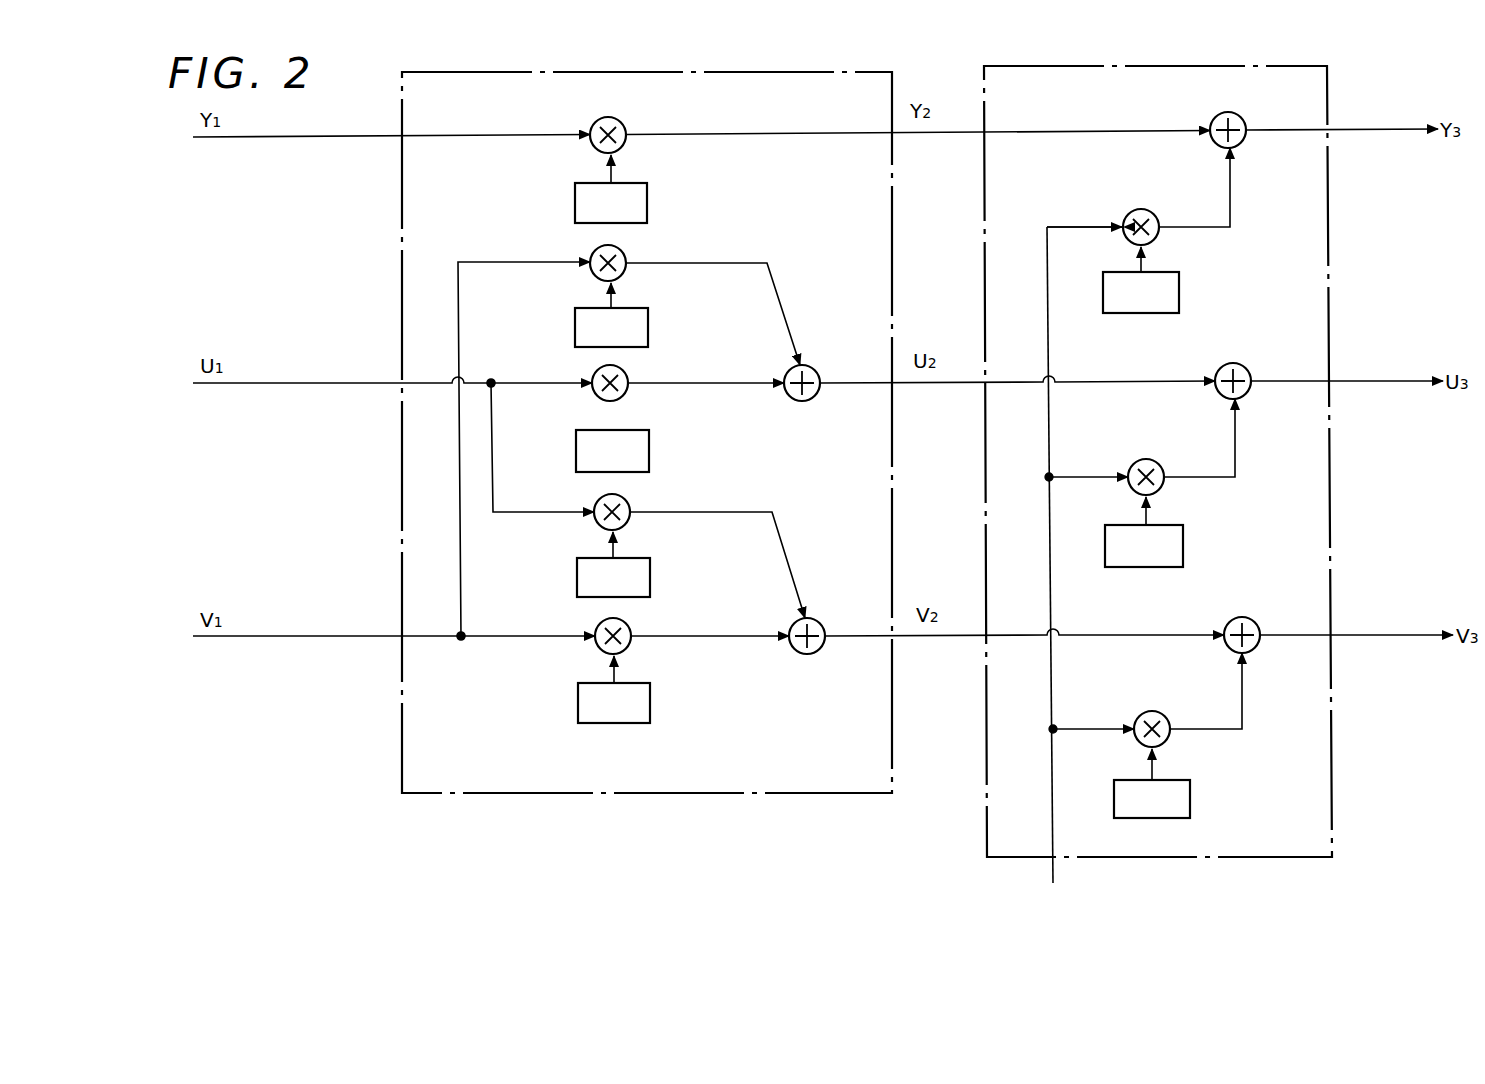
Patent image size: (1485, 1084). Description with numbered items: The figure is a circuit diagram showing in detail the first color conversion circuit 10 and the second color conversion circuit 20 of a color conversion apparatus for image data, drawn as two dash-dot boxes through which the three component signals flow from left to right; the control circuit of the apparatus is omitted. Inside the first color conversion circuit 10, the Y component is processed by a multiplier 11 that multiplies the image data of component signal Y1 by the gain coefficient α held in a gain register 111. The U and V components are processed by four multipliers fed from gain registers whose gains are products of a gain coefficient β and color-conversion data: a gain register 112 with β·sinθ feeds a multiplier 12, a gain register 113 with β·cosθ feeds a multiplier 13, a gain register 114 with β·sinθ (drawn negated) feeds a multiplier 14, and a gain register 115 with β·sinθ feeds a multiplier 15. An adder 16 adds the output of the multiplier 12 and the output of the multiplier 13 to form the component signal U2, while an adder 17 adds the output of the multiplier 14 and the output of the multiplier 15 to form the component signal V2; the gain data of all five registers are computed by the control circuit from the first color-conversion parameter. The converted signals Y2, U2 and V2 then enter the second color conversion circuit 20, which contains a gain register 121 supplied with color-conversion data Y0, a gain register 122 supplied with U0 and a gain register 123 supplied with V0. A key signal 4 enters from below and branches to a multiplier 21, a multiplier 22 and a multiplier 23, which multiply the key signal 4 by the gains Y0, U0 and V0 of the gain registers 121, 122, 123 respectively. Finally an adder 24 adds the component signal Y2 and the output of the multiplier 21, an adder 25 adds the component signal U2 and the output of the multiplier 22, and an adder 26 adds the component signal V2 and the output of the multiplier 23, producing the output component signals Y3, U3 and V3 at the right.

The key signal 4 is at (1053, 879).
The first color conversion circuit 10 is at (647, 432).
The multiplier 11 is at (620, 122).
The multiplier 12 is at (625, 254).
The multiplier 13 is at (627, 376).
The multiplier 14 is at (630, 505).
The multiplier 15 is at (630, 645).
The adder 16 is at (802, 364).
The adder 17 is at (808, 617).
The second color conversion circuit 20 is at (1158, 461).
The multiplier 21 is at (1128, 213).
The multiplier 22 is at (1132, 463).
The multiplier 23 is at (1138, 716).
The adder 24 is at (1214, 118).
The adder 25 is at (1219, 370).
The adder 26 is at (1227, 625).
The gain register 111 is at (647, 188).
The gain register 112 is at (648, 318).
The gain register 113 is at (649, 440).
The gain register 114 is at (650, 567).
The gain register 115 is at (650, 723).
The gain register 121 is at (1179, 280).
The gain register 122 is at (1183, 535).
The gain register 123 is at (1190, 785).